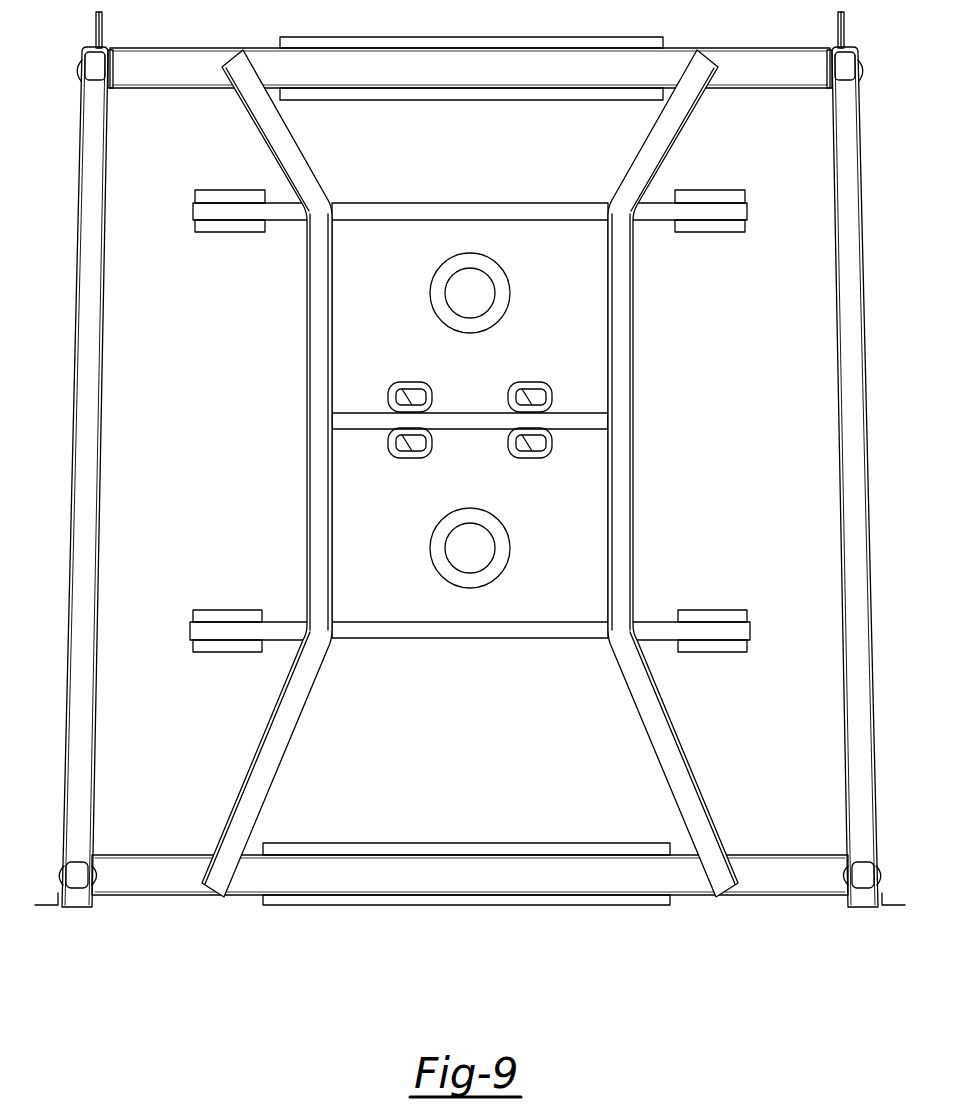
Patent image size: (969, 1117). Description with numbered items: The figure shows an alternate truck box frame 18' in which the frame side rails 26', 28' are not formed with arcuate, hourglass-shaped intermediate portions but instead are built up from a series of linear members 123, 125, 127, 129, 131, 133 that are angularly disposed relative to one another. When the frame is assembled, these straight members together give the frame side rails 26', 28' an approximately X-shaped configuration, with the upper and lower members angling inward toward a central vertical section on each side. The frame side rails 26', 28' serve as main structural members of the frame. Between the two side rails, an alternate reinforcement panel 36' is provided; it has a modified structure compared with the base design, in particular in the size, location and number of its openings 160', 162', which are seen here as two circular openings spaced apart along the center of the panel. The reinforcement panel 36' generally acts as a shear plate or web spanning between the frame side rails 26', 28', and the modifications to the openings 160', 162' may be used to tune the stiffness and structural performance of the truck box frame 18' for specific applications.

The truck box frame 18' is at (349, 1001).
The frame side rail 26' is at (680, 473).
The frame side rail 28' is at (262, 473).
The reinforcement panel 36' is at (470, 401).
The linear member 123 is at (670, 124).
The linear member 125 is at (620, 348).
The linear member 127 is at (675, 787).
The linear member 129 is at (275, 124).
The linear member 131 is at (320, 343).
The linear member 133 is at (258, 786).
The opening 160' is at (510, 548).
The opening 162' is at (510, 293).